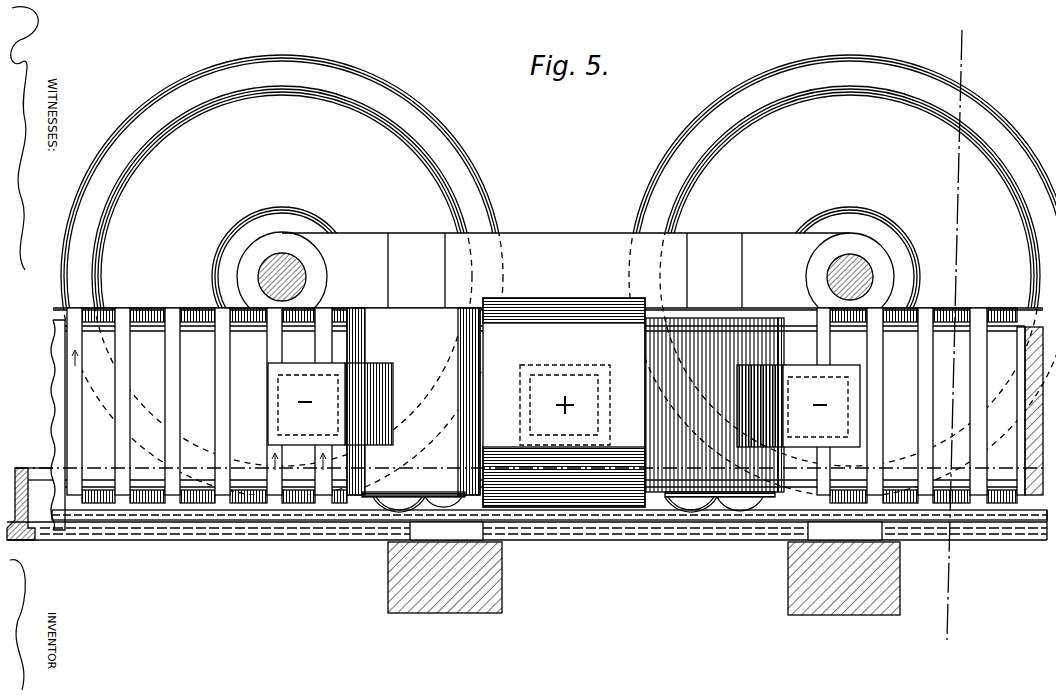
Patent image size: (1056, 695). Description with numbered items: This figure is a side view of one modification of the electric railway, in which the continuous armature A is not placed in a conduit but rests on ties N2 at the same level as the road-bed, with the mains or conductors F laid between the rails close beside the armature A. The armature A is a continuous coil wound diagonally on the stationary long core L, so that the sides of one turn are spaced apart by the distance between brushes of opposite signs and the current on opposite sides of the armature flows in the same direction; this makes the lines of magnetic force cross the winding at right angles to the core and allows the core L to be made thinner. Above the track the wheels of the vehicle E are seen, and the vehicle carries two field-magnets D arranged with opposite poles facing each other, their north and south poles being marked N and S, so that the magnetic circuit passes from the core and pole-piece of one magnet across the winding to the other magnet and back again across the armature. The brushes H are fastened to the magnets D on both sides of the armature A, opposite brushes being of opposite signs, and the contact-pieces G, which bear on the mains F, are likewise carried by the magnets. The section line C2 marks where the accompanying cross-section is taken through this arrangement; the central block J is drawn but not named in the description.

The vehicle E is at (558, 276).
The armature A is at (218, 410).
The stationary long core L is at (56, 405).
The field-magnet D is at (413, 401).
The south pole S is at (411, 411).
The central block J is at (564, 402).
The north pole N is at (714, 405).
The brushes H is at (564, 405).
The contact-pieces G is at (392, 503).
The mains or conductors F is at (116, 515).
The ties N2 is at (660, 578).
The section line C2 is at (954, 341).